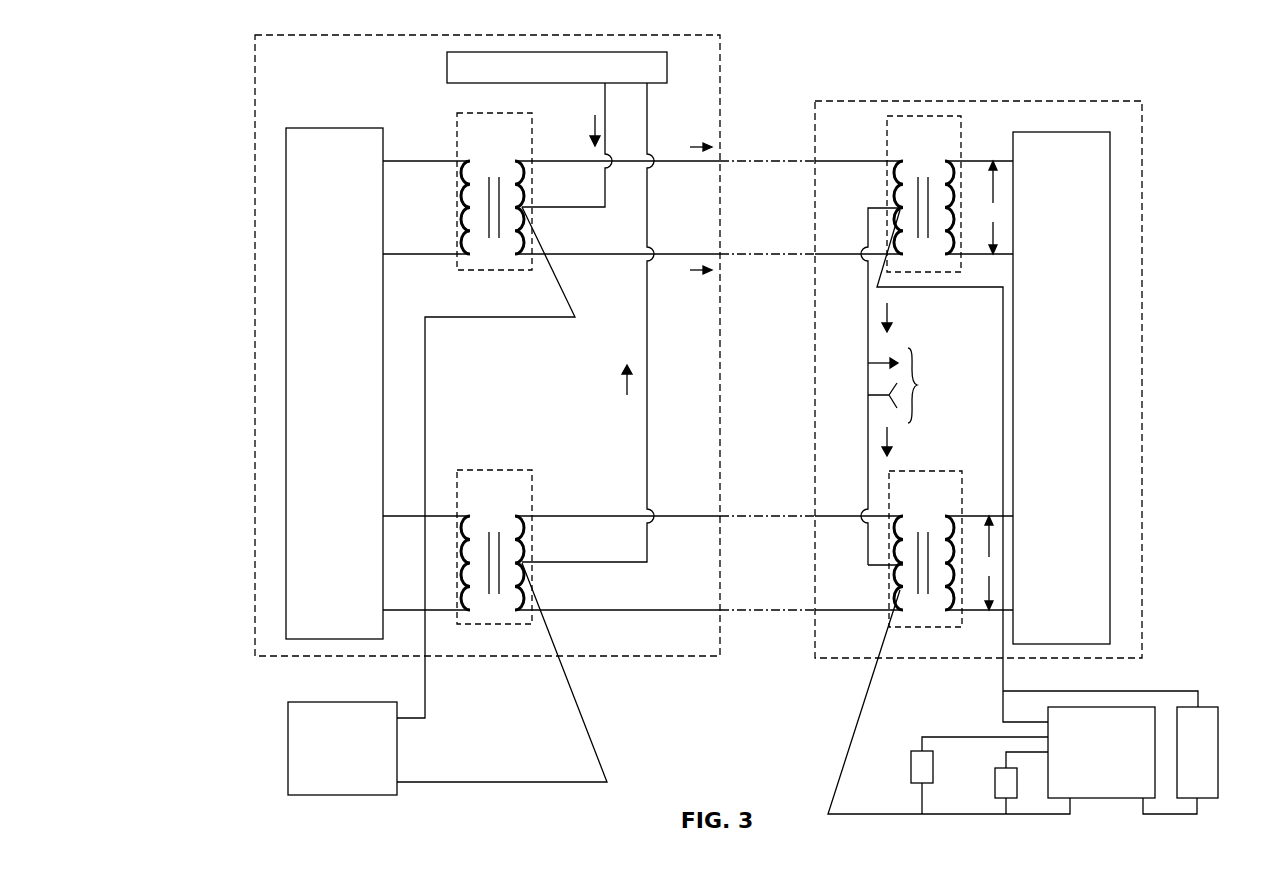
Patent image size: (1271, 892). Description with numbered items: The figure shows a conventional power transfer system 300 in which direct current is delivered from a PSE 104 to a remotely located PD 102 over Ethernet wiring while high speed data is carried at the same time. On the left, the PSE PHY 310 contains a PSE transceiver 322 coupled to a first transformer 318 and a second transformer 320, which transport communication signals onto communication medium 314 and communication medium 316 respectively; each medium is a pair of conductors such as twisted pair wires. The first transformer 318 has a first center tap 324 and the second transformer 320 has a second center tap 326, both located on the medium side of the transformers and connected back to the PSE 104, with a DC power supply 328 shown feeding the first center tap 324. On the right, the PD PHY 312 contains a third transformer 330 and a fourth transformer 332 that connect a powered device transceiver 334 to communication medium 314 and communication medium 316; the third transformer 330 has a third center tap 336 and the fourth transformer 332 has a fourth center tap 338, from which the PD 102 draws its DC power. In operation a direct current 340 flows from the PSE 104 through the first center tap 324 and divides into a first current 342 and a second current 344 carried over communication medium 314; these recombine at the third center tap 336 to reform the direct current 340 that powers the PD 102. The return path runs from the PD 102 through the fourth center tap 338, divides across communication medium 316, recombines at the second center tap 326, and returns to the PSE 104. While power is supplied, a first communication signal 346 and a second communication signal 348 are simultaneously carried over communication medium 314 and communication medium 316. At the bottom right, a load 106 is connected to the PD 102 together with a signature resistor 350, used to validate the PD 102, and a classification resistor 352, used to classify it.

The power over Ethernet system 300 is at (1056, 36).
The PSE PHY 310 is at (697, 35).
The PD PHY 312 is at (918, 100).
The communication medium 314 is at (740, 238).
The communication medium 316 is at (782, 530).
The first transformer 318 is at (466, 139).
The second transformer 320 is at (466, 494).
The PSE transceiver 322 is at (321, 413).
The first center tap 324 is at (551, 184).
The second center tap 326 is at (560, 548).
The DC power supply 328 is at (447, 72).
The third transformer 330 is at (909, 142).
The fourth transformer 332 is at (911, 499).
The powered device transceiver 334 is at (1048, 415).
The third center tap 336 is at (848, 197).
The fourth center tap 338 is at (849, 580).
The direct current 340 is at (585, 115).
The first current 342 is at (681, 131).
The second current 344 is at (688, 300).
The first communication signal 346 is at (992, 207).
The second communication signal 348 is at (988, 563).
The signature resistor 350 is at (911, 768).
The classification resistor 352 is at (995, 785).
The PD 102 is at (1112, 800).
The PSE 104 is at (288, 745).
The load 106 is at (1205, 707).